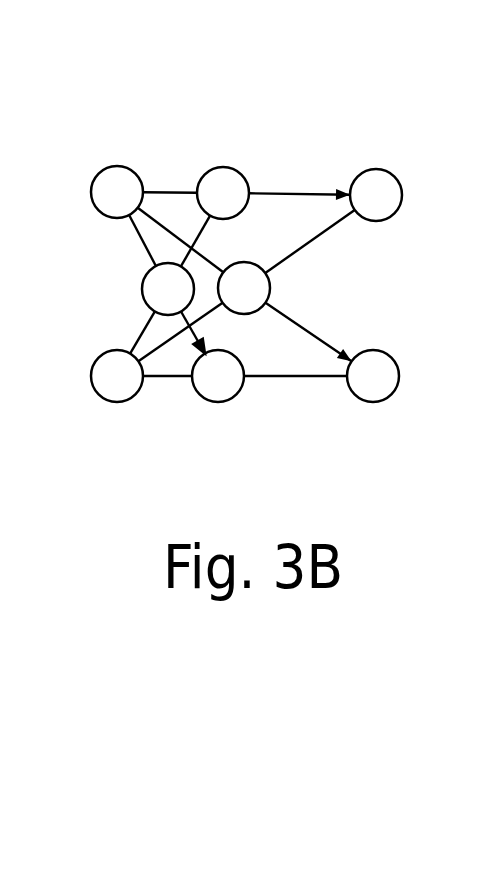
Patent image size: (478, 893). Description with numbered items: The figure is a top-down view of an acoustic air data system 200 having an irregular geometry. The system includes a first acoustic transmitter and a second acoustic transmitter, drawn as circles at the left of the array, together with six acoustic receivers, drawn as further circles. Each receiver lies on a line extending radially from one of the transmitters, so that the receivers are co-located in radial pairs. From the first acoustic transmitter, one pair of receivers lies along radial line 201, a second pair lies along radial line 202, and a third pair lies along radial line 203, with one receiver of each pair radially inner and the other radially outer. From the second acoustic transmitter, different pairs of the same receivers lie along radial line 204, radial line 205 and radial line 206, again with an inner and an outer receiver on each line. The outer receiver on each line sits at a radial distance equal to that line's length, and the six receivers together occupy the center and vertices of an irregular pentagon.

The acoustic air data system 200 is at (275, 103).
The radial line 201 is at (283, 378).
The radial line 202 is at (297, 252).
The radial line 203 is at (170, 231).
The radial line 204 is at (140, 235).
The radial line 205 is at (302, 323).
The radial line 206 is at (282, 191).